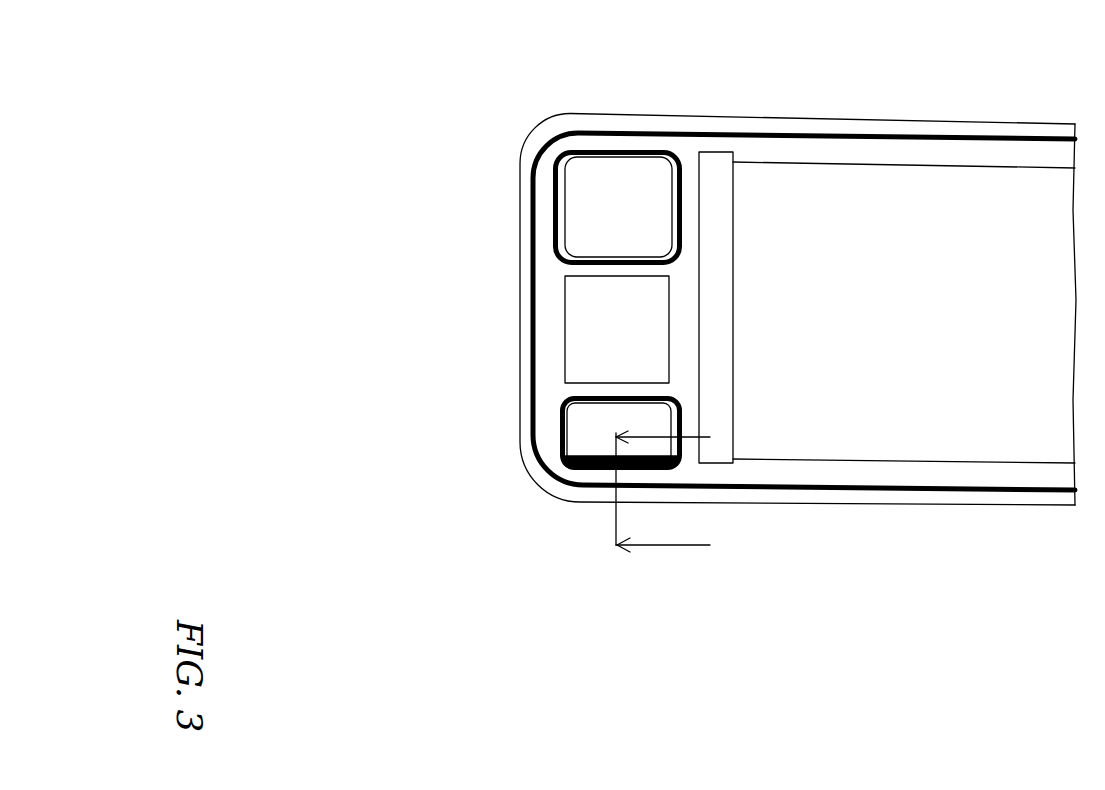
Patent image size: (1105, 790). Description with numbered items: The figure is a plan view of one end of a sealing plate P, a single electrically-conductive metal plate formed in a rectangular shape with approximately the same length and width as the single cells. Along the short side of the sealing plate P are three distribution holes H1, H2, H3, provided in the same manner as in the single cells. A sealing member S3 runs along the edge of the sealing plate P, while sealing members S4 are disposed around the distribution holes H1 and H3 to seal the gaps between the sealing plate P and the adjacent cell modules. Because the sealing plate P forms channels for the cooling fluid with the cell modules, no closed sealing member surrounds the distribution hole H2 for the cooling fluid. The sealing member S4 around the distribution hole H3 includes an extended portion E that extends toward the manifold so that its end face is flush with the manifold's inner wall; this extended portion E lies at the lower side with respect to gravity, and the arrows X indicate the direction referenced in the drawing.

The sealing plate P is at (1062, 103).
The sealing member S3 is at (918, 134).
The sealing member S4 is at (683, 227).
The distribution hole H1 is at (583, 215).
The distribution hole H2 is at (563, 335).
The distribution hole H3 is at (583, 422).
The extended portion E is at (585, 454).
The X direction X is at (663, 494).